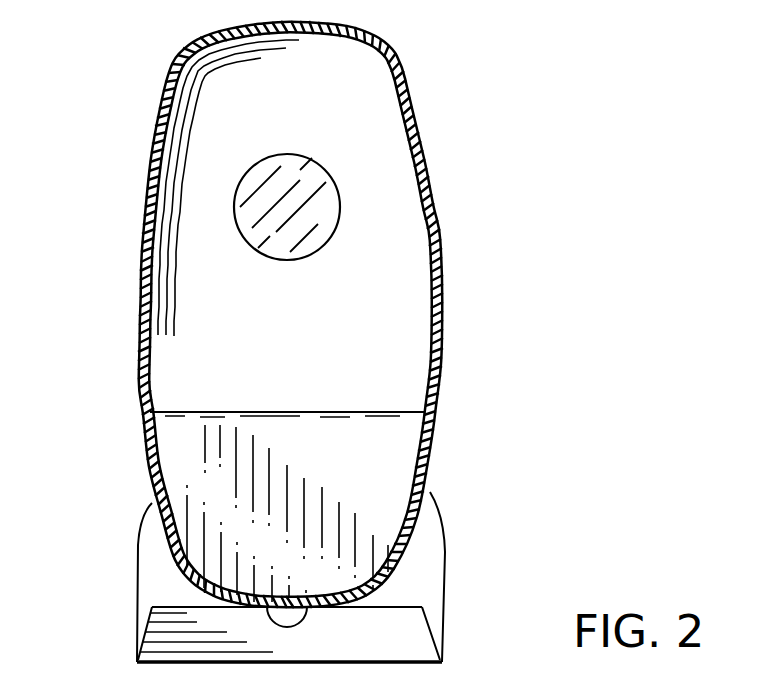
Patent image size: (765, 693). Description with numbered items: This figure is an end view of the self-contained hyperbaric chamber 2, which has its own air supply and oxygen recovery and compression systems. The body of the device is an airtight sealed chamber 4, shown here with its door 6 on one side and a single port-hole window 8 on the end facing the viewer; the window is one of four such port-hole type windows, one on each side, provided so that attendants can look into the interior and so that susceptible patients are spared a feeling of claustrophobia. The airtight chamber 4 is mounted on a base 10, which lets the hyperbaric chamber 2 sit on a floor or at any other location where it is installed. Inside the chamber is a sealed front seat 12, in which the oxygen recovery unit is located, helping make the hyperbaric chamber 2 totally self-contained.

The hyperbaric chamber 2 is at (298, 314).
The airtight sealed chamber 4 is at (448, 296).
The door 6 is at (140, 193).
The port-hole type window 8 is at (318, 220).
The base 10 is at (150, 602).
The sealed front seat 12 is at (217, 408).